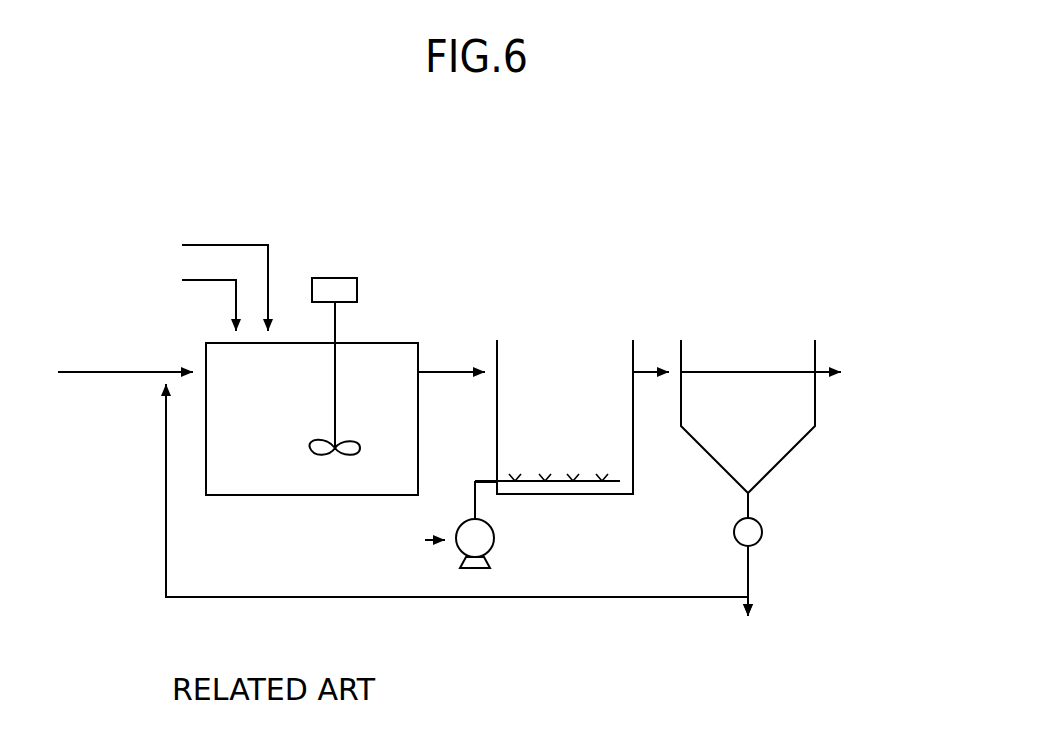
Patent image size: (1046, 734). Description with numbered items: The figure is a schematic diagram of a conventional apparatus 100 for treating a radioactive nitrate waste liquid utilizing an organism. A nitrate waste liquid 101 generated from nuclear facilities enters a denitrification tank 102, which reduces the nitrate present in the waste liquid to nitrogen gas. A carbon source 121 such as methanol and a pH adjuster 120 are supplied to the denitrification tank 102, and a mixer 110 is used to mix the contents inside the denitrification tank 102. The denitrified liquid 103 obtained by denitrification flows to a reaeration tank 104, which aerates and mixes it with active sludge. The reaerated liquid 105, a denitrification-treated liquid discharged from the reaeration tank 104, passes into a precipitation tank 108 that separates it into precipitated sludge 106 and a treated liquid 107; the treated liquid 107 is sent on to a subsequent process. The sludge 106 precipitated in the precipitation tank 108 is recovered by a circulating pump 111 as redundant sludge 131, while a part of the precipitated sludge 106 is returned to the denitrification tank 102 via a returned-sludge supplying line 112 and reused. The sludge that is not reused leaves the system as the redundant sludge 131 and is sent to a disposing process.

The conventional apparatus for treating a radioactive nitrate waste liquid 100 is at (609, 194).
The nitrate waste liquid 101 is at (153, 361).
The denitrification tank 102 is at (310, 214).
The denitrified liquid 103 is at (458, 357).
The reaeration tank 104 is at (550, 281).
The reaerated liquid 105 is at (660, 357).
The precipitated sludge 106 is at (760, 556).
The treated liquid 107 is at (789, 370).
The precipitation tank 108 is at (780, 281).
The mixer 110 is at (330, 278).
The circulating pump 111 is at (762, 532).
The returned-sludge supplying line 112 is at (462, 600).
The pH adjuster 120 is at (204, 283).
The carbon source 121 is at (188, 300).
The redundant sludge 131 is at (751, 632).